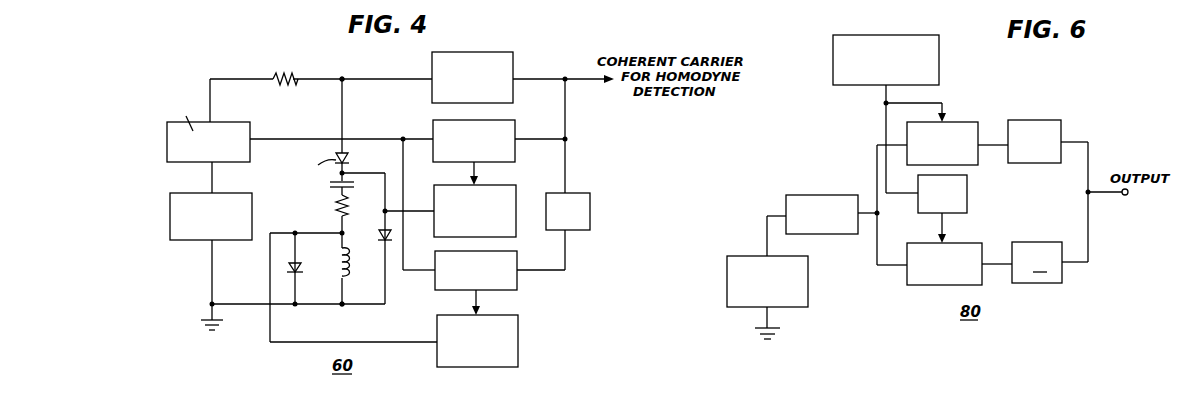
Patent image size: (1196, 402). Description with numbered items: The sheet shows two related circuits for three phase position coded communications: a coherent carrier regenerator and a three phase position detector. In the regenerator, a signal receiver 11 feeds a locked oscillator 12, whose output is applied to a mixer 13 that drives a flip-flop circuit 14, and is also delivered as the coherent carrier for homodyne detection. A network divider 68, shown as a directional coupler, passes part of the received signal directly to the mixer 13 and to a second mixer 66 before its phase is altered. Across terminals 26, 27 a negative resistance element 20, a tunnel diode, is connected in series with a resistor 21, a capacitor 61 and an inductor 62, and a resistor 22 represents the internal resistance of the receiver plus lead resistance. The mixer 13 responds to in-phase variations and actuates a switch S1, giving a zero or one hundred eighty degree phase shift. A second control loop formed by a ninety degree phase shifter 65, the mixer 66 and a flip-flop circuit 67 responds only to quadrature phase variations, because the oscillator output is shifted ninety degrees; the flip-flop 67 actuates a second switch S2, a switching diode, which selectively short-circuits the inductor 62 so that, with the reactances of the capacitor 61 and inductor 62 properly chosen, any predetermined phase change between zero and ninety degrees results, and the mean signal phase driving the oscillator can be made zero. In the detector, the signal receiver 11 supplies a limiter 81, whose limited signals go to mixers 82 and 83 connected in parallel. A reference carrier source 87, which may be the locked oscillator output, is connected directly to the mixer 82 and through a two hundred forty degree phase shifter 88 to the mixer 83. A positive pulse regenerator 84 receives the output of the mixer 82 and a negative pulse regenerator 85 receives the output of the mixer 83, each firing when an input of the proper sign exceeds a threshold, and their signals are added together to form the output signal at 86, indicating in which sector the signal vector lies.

In FIG. 4, the signal receiver 11 is at (188, 237).
In FIG. 6, the signal receiver 11 is at (808, 286).
In FIG. 4, the locked oscillator 12 is at (513, 66).
In FIG. 4, the mixer 13 is at (515, 129).
In FIG. 4, the flip-flop circuit 14 is at (516, 195).
In FIG. 4, the negative resistance element 20 is at (350, 160).
In FIG. 4, the resistor 21 is at (337, 202).
In FIG. 4, the resistor 22 is at (283, 69).
In FIG. 4, the terminal 26 is at (343, 78).
In FIG. 4, the terminal 27 is at (344, 306).
In FIG. 4, the capacitor 61 is at (355, 184).
In FIG. 4, the inductor 62 is at (353, 266).
In FIG. 4, the 90 degree phase shifter 65 is at (590, 219).
In FIG. 4, the mixer 66 is at (517, 278).
In FIG. 4, the flip-flop circuit 67 is at (518, 346).
In FIG. 4, the network divider 68 is at (236, 120).
In FIG. 4, the switch S1 is at (373, 230).
In FIG. 4, the second switch S2 is at (306, 265).
In FIG. 6, the limiter 81 is at (828, 196).
In FIG. 6, the mixer 82 is at (957, 126).
In FIG. 6, the mixer 83 is at (968, 247).
In FIG. 6, the positive pulse regenerator 84 is at (1050, 121).
In FIG. 6, the negative pulse regenerator 85 is at (1032, 243).
In FIG. 6, the output 86 is at (1123, 196).
In FIG. 6, the reference carrier source 87 is at (940, 62).
In FIG. 6, the 240 degree phase shifter 88 is at (967, 193).